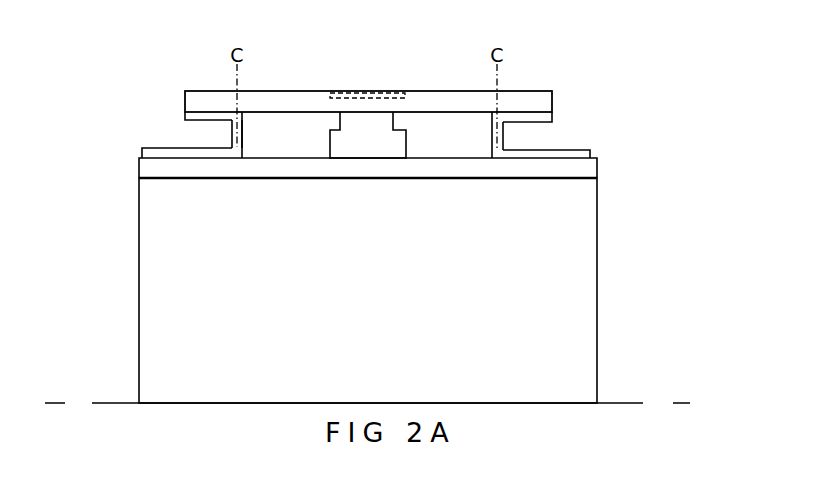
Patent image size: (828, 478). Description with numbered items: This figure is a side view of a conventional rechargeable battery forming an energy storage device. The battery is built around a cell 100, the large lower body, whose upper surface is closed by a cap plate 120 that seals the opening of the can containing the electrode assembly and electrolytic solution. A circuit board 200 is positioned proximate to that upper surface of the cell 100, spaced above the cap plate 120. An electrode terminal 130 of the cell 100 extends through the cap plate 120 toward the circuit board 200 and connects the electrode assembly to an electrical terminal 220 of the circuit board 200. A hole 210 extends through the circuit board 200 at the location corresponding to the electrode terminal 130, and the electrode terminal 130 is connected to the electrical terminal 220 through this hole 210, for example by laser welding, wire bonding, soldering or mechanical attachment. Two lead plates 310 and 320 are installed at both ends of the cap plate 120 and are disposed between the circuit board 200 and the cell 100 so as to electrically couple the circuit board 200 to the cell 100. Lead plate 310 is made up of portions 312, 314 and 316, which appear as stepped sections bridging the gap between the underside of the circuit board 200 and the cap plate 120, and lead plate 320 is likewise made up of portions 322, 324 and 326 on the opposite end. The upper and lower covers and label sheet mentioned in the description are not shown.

The cell 100 is at (126, 283).
The cap plate 120 is at (142, 170).
The electrode terminal 130 is at (340, 122).
The circuit board 200 is at (369, 72).
The hole 210 is at (404, 96).
The electrical terminal 220 is at (365, 95).
The lead plate 310 is at (124, 140).
The portion of lead plate 312 is at (186, 114).
The portion of lead plate 314 is at (151, 151).
The portion of lead plate 316 is at (232, 137).
The lead plate 320 is at (618, 141).
The portion of lead plate 322 is at (537, 117).
The portion of lead plate 324 is at (587, 149).
The portion of lead plate 326 is at (505, 137).